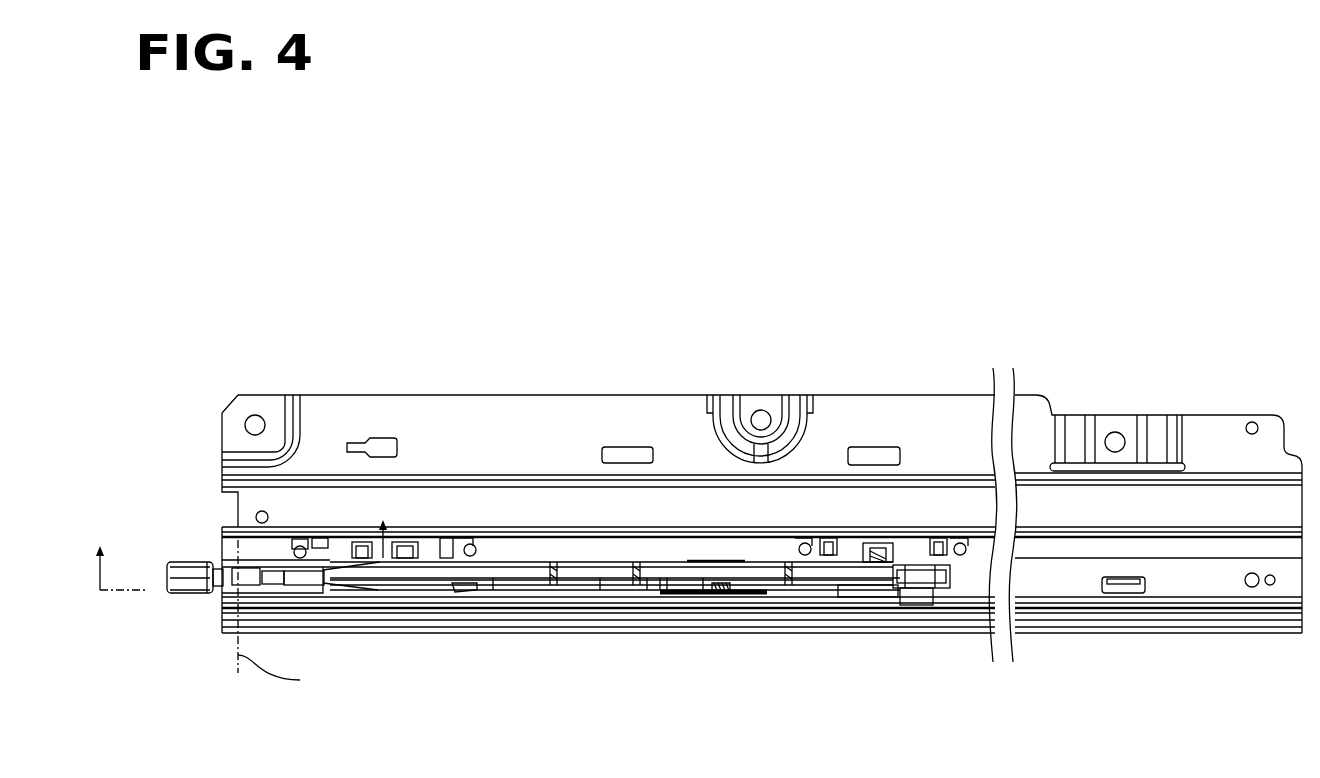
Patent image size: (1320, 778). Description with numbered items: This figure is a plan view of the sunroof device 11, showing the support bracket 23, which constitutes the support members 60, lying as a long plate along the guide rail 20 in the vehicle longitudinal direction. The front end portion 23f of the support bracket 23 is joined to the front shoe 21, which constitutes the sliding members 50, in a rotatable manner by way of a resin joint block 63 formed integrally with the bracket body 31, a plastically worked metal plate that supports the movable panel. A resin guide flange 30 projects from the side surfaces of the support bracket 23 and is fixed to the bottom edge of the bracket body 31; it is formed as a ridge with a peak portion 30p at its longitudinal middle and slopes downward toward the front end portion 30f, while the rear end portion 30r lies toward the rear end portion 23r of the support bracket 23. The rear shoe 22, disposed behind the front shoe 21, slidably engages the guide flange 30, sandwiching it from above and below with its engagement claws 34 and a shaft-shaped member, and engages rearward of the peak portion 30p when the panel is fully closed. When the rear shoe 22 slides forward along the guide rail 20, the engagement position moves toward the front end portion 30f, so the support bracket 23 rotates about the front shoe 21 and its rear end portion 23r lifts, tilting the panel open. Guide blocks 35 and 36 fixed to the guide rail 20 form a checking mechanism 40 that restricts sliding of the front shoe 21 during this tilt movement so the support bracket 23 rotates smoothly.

The sunroof device 11 is at (132, 170).
The guide rail 20 is at (224, 636).
The front shoe 21 is at (172, 598).
The sliding members 50 is at (166, 624).
The rear shoe 22 is at (650, 597).
The support bracket 23 is at (515, 558).
The support members 60 is at (611, 539).
The front end portion 23f is at (228, 558).
The joint block 63 is at (271, 525).
The rear end portion 23r is at (952, 572).
The guide flange 30 is at (583, 593).
The front end portion 30f is at (463, 592).
The rear end portion 30r is at (845, 597).
The peak portion 30p is at (655, 575).
The bracket body 31 is at (790, 565).
The engagement claws 34 is at (713, 578).
The guide block 35 is at (412, 542).
The guide block 36 is at (870, 537).
The checking mechanism 40 is at (450, 497).